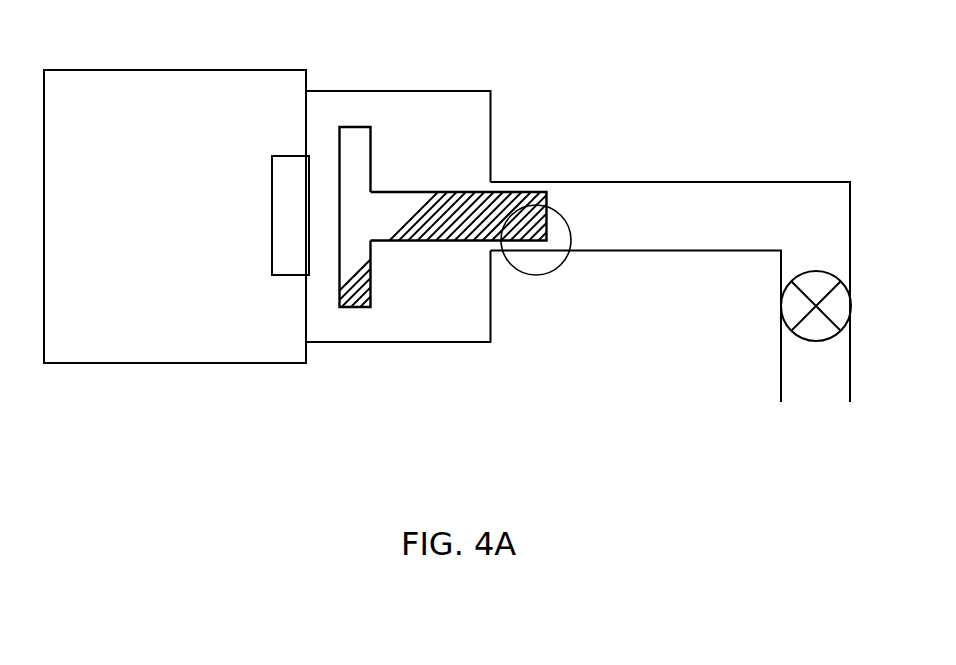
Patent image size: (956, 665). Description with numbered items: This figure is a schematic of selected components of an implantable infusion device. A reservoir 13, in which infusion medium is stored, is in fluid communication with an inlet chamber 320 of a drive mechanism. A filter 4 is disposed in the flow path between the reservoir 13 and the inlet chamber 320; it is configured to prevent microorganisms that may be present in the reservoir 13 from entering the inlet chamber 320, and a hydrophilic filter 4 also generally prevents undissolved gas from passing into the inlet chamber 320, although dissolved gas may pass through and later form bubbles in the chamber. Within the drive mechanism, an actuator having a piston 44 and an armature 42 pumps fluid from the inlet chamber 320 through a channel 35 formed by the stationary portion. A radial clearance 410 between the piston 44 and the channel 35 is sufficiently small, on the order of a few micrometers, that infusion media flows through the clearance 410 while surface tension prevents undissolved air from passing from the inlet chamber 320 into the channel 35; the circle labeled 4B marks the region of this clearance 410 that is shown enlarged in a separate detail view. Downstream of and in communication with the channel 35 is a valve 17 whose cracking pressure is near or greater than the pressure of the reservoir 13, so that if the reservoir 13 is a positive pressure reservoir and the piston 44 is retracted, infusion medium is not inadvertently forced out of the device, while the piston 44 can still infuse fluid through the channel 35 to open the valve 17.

The reservoir 13 is at (163, 132).
The filter 4 is at (288, 250).
The inlet chamber 320 is at (411, 310).
The armature 42 is at (358, 273).
The piston 44 is at (452, 215).
The circle labeled 4B is at (543, 278).
The channel 35 is at (617, 220).
The radial clearance 410 is at (513, 186).
The valve 17 is at (815, 287).